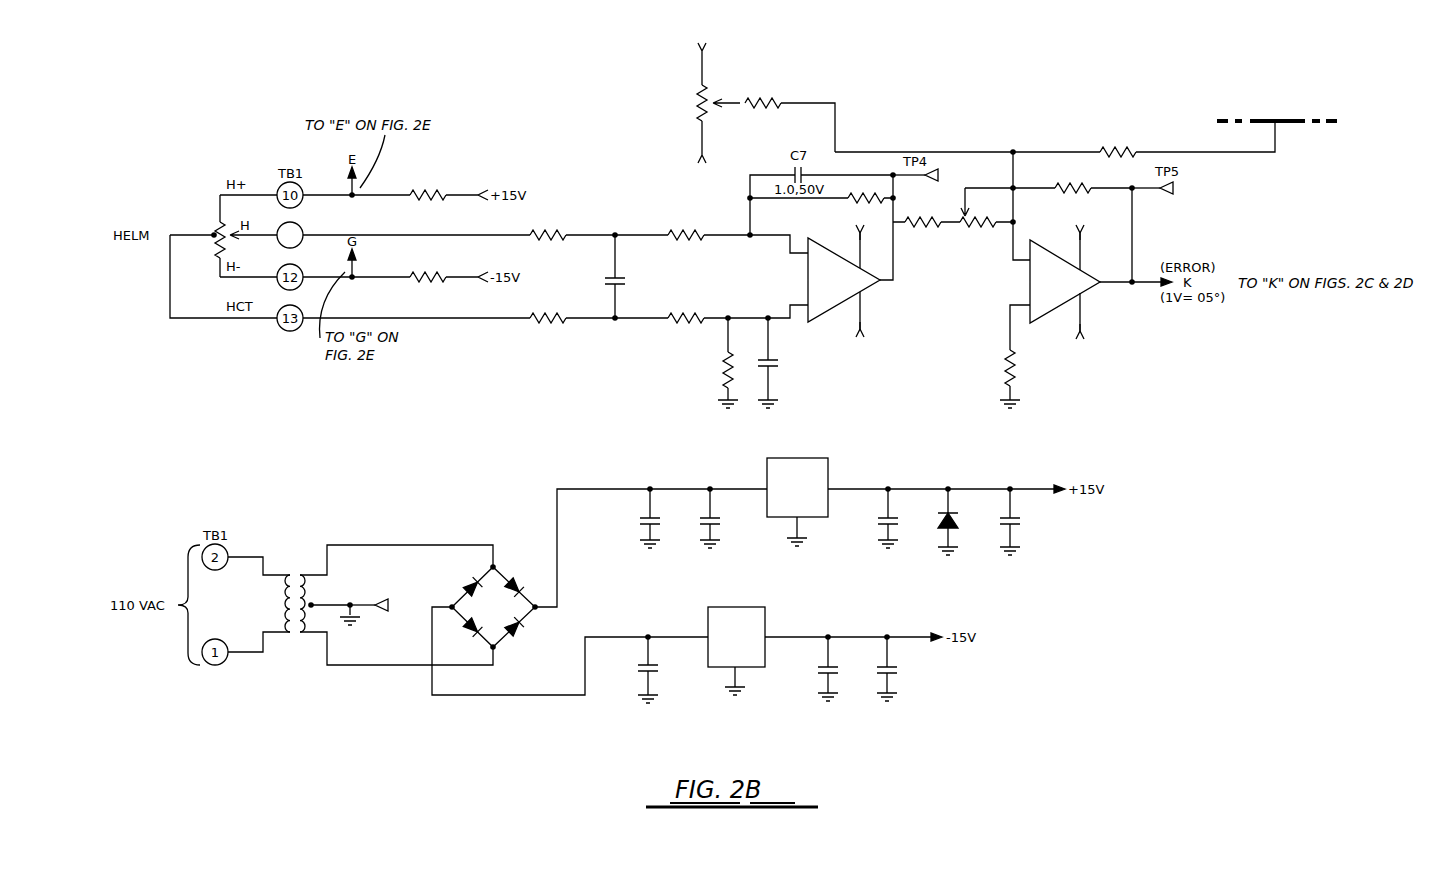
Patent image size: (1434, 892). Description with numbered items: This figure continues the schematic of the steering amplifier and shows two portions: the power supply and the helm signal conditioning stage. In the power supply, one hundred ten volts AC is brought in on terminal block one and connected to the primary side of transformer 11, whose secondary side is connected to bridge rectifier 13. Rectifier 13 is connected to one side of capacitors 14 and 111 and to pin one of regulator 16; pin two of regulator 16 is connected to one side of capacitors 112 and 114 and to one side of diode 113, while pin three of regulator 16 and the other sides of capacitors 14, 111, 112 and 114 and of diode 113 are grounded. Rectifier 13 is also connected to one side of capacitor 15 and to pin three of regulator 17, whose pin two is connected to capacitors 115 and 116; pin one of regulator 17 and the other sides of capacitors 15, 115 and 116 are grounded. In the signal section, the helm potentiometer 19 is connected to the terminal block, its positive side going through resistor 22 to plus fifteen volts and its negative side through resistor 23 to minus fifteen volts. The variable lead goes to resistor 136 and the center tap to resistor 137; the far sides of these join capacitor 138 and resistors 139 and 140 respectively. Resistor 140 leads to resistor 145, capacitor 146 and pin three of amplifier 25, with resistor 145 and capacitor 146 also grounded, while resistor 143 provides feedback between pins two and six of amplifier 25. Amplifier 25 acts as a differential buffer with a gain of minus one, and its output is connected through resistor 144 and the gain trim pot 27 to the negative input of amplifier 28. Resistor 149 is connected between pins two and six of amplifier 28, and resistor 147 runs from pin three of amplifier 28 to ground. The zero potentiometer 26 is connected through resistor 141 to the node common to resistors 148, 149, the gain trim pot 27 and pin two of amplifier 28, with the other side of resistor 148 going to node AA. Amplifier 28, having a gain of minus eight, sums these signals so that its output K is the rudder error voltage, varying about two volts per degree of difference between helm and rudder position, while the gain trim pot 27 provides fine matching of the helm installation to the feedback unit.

The helm potentiometer 19 is at (218, 223).
The resistor 144 is at (203, 241).
The resistor 148 is at (280, 226).
The resistor 22 is at (441, 198).
The resistor 23 is at (446, 276).
The resistor 136 is at (566, 232).
The resistor 137 is at (560, 320).
The capacitor 138 is at (619, 279).
The resistor 139 is at (700, 236).
The resistor 140 is at (703, 318).
The resistor 141 is at (776, 103).
The zero potentiometer 26 is at (698, 113).
The resistor 143 is at (884, 196).
The amplifier 25 is at (823, 321).
The resistor 145 is at (733, 378).
The capacitor 146 is at (757, 366).
The gain trim pot 27 is at (958, 232).
The amplifier 28 is at (1068, 300).
The resistor 147 is at (1005, 378).
The resistor 149 is at (1052, 186).
The transformer 11 is at (298, 570).
The capacitor 112 is at (394, 600).
The bridge rectifier 13 is at (497, 655).
The capacitor 14 is at (643, 518).
The capacitor 111 is at (705, 522).
The regulator 16 is at (829, 470).
The regulator 17 is at (762, 613).
The capacitor 15 is at (644, 661).
The diode 113 is at (945, 538).
The capacitor 114 is at (1003, 546).
The capacitor 115 is at (818, 683).
The capacitor 116 is at (880, 690).